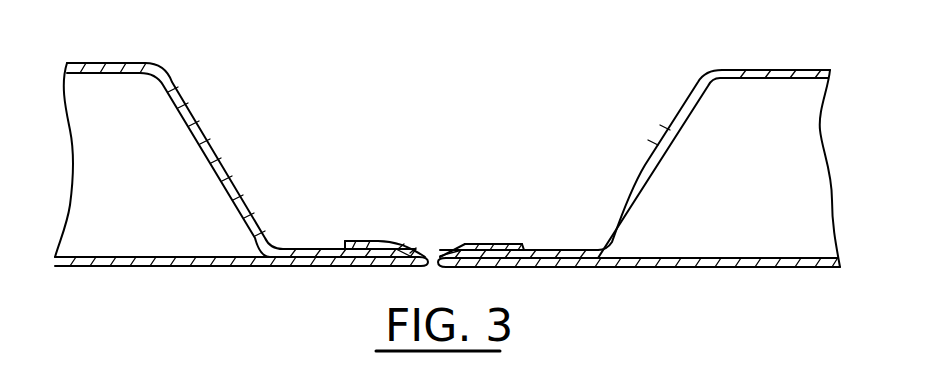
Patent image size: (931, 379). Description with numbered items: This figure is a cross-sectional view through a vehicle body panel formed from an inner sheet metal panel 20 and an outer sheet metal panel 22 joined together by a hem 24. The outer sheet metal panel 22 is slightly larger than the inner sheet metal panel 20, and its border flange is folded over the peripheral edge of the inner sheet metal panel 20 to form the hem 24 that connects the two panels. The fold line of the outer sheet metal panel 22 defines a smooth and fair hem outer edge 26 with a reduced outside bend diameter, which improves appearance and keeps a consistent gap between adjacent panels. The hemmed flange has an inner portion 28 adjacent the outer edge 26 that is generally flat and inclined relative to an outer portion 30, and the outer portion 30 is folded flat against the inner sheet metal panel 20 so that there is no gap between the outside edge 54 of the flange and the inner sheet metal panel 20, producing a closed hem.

The inner sheet metal panel 20 is at (247, 210).
The outer sheet metal panel 22 is at (217, 260).
The hem 24 is at (380, 232).
The hem outer edge 26 is at (437, 253).
The inner portion 28 is at (398, 247).
The outer portion 30 is at (356, 240).
The outside edge 54 is at (345, 247).